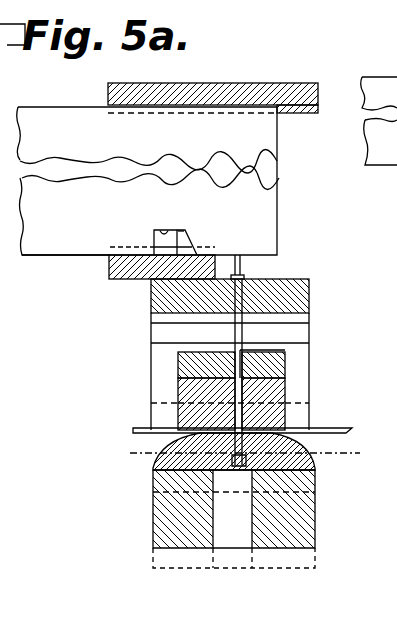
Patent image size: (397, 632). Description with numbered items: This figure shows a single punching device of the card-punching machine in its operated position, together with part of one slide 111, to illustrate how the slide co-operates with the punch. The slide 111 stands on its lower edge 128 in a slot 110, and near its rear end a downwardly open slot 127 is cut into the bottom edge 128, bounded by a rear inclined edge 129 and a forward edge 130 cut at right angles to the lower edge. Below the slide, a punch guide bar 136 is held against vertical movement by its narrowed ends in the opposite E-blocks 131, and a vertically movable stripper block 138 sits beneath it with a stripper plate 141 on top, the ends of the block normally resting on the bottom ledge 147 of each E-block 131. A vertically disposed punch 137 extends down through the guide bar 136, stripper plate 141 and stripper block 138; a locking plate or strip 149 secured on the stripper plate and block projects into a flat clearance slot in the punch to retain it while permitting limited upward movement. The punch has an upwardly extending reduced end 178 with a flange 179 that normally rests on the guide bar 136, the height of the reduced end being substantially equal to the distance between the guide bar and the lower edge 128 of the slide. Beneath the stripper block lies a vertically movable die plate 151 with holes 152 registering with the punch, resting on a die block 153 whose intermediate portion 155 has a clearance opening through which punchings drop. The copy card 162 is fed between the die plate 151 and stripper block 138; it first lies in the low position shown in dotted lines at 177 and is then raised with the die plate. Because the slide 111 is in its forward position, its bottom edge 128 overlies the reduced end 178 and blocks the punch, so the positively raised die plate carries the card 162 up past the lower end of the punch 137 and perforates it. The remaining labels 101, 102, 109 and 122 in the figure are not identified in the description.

The upper plate 101 is at (262, 83).
The lower mounting block 102 is at (122, 282).
The plate step 109 is at (303, 109).
The slot 110 is at (186, 240).
The slide 111 is at (41, 107).
The element 122 is at (390, 4).
The bottom slot 127 is at (160, 230).
The lower edge 128 is at (43, 256).
The rear inclined edge 129 is at (188, 240).
The forward edge 130 is at (154, 245).
The E-block 131 is at (152, 322).
The punch guide bar 136 is at (309, 298).
The punch 137 is at (236, 338).
The stripper block 138 is at (285, 384).
The stripper plate 141 is at (180, 360).
The bottom ledge 147 is at (158, 412).
The locking plate 149 is at (276, 350).
The die plate 151 is at (155, 468).
The hole 152 is at (241, 471).
The die block 153 is at (315, 514).
The intermediate portion 155 is at (236, 550).
The copy card 162 is at (344, 430).
The low position of card 177 is at (262, 458).
The reduced end 178 is at (243, 262).
The flange 179 is at (244, 275).